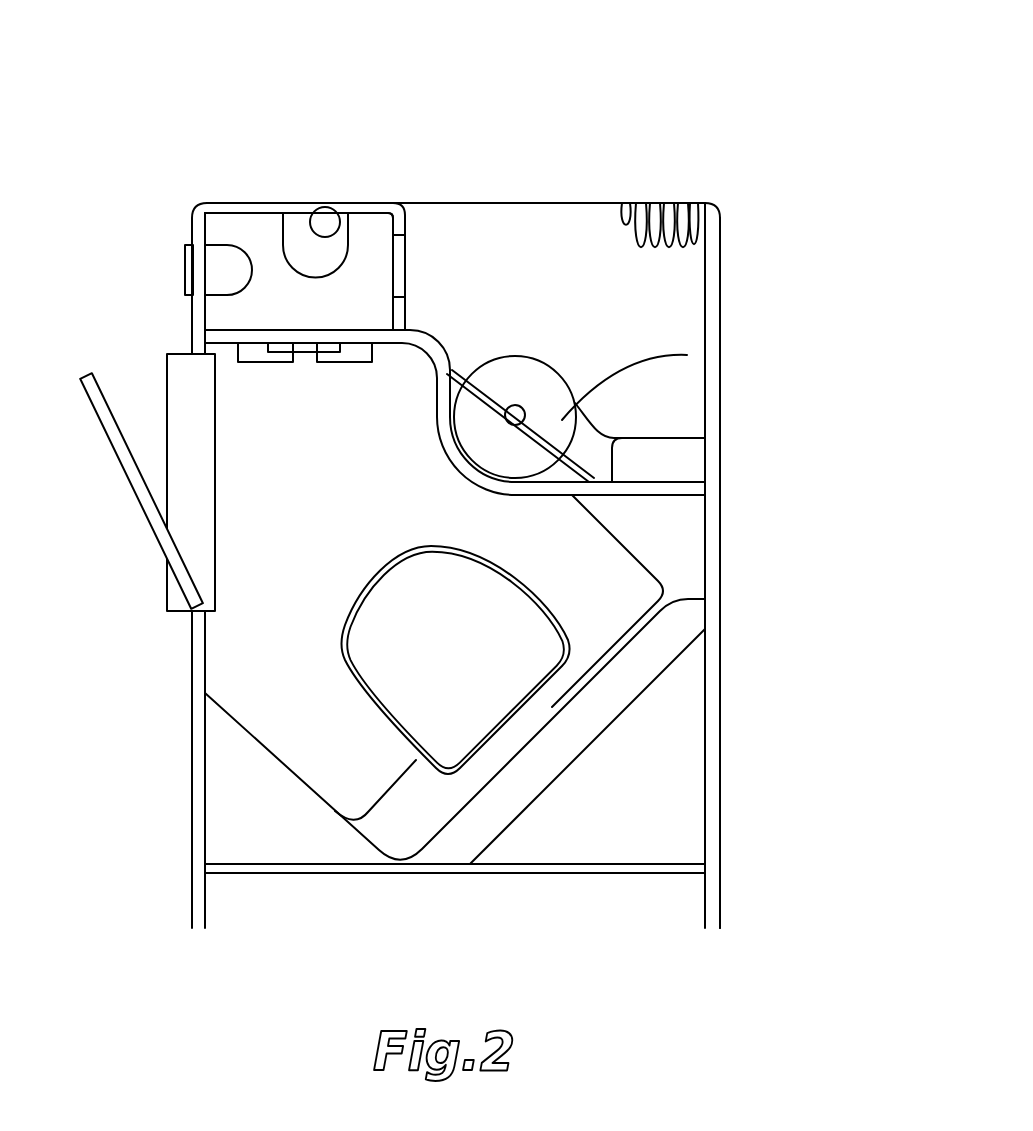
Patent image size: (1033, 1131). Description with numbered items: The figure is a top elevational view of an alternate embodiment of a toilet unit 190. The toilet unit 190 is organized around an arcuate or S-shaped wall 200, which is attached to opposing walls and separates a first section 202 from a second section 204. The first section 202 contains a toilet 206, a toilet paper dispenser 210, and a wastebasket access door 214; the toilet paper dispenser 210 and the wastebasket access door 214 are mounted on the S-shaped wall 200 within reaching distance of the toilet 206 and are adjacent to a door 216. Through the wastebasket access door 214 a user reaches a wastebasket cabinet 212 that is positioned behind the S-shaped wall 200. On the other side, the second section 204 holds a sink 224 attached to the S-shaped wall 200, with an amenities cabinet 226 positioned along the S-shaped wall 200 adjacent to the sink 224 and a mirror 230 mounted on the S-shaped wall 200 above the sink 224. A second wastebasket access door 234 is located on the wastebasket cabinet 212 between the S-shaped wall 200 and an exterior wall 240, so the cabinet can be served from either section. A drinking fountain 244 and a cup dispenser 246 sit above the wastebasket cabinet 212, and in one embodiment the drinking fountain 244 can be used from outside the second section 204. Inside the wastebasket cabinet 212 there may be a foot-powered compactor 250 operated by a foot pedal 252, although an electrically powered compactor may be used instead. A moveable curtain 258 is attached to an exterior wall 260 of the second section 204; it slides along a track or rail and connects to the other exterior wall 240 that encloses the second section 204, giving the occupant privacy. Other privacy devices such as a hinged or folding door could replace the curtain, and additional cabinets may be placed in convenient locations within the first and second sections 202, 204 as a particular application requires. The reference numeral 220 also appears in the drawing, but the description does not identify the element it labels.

The toilet unit 190 is at (811, 78).
The S-shaped wall 200 is at (658, 490).
The first section 202 is at (288, 704).
The second section 204 is at (540, 228).
The toilet 206 is at (514, 670).
The toilet paper dispenser 210 is at (350, 363).
The wastebasket cabinet 212 is at (350, 281).
The wastebasket access door 214 is at (300, 350).
The door 216 is at (128, 468).
The print head assembly 220 is at (248, 230).
The sink 224 is at (533, 397).
The amenities cabinet 226 is at (670, 440).
The mirror 230 is at (687, 355).
The wastebasket access door 234 is at (400, 264).
The exterior wall 240 is at (237, 207).
The drinking fountain 244 is at (297, 232).
The cup dispenser 246 is at (327, 220).
The foot-powered compactor 250 is at (185, 277).
The foot pedal 252 is at (223, 282).
The moveable curtain 258 is at (658, 204).
The exterior wall 260 is at (721, 248).